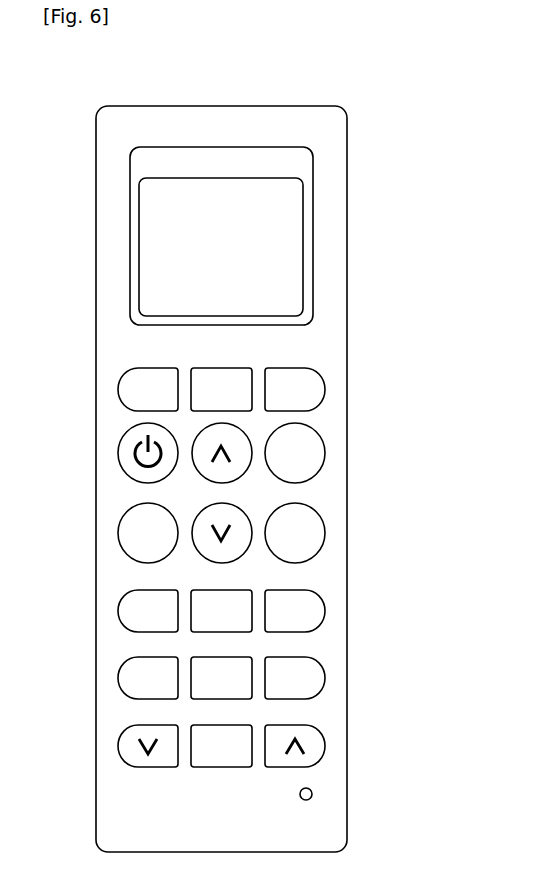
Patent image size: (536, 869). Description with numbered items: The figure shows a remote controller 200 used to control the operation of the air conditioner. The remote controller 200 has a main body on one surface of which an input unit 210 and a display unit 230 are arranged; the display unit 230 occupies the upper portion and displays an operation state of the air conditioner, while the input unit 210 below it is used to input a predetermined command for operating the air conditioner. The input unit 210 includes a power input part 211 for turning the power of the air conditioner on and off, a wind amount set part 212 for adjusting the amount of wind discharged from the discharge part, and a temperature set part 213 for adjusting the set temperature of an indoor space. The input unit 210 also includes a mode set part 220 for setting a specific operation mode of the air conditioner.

The remote controller 200 is at (358, 97).
The input unit 210 is at (120, 368).
The power input part 211 is at (122, 452).
The wind amount set part 212 is at (122, 531).
The temperature set part 213 is at (237, 472).
The mode set part 220 is at (242, 373).
The display unit 230 is at (288, 249).